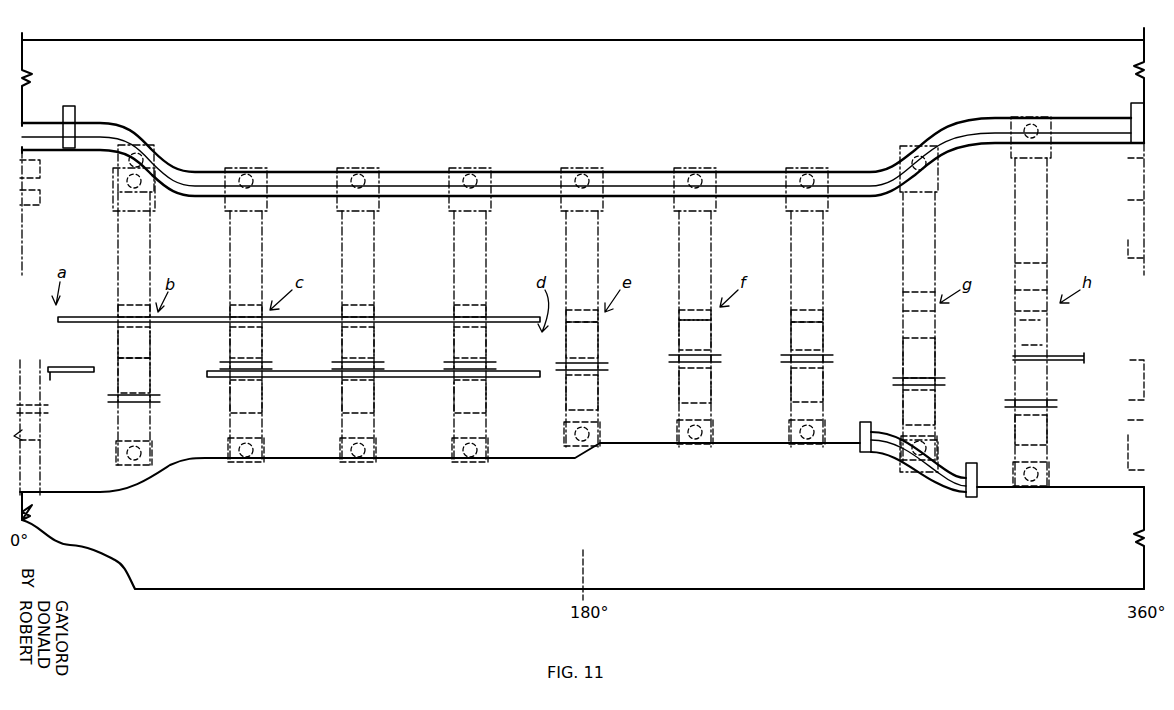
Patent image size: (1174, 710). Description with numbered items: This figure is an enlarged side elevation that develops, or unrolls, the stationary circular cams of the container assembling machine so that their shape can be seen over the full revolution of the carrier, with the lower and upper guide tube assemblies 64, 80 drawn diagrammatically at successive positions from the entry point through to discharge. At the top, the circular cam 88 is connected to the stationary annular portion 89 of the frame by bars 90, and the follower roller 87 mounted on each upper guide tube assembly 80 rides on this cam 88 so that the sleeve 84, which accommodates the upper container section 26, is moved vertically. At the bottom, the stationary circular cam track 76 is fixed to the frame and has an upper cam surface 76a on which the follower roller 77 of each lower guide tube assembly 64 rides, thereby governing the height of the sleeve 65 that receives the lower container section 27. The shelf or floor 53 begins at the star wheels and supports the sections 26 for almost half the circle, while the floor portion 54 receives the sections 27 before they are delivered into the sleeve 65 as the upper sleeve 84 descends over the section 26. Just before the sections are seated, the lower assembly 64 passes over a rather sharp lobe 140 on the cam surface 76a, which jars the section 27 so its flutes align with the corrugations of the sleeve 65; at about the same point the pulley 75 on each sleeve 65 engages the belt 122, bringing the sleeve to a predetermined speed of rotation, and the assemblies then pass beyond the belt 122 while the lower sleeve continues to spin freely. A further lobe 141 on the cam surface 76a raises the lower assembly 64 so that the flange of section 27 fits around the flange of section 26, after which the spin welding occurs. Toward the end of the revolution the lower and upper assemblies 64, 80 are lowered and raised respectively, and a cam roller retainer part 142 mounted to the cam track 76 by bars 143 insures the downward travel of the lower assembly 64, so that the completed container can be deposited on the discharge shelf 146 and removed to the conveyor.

The stationary annular portion of the frame 89 is at (650, 72).
The bars 90 is at (46, 112).
The circular cam 88 is at (413, 190).
The follower roller 87 is at (572, 195).
The sleeve 84 is at (222, 250).
The upper guide tube assembly 80 is at (960, 262).
The shelf 53 is at (393, 313).
The belt 122 is at (397, 370).
The floor portion 54 is at (64, 374).
The discharge shelf 146 is at (1013, 357).
The container section 26 is at (118, 305).
The container section 27 is at (150, 342).
The sleeve 65 is at (150, 366).
The pulley 75 is at (160, 398).
The lower guide tube assembly 64 is at (616, 384).
The follower roller 77 is at (340, 448).
The upper cam surface 76a is at (88, 490).
The lobe 140 is at (208, 456).
The lobe 141 is at (570, 456).
The cam roller retainer part 142 is at (868, 424).
The bars 143 is at (862, 453).
The stationary circular cam track 76 is at (410, 565).